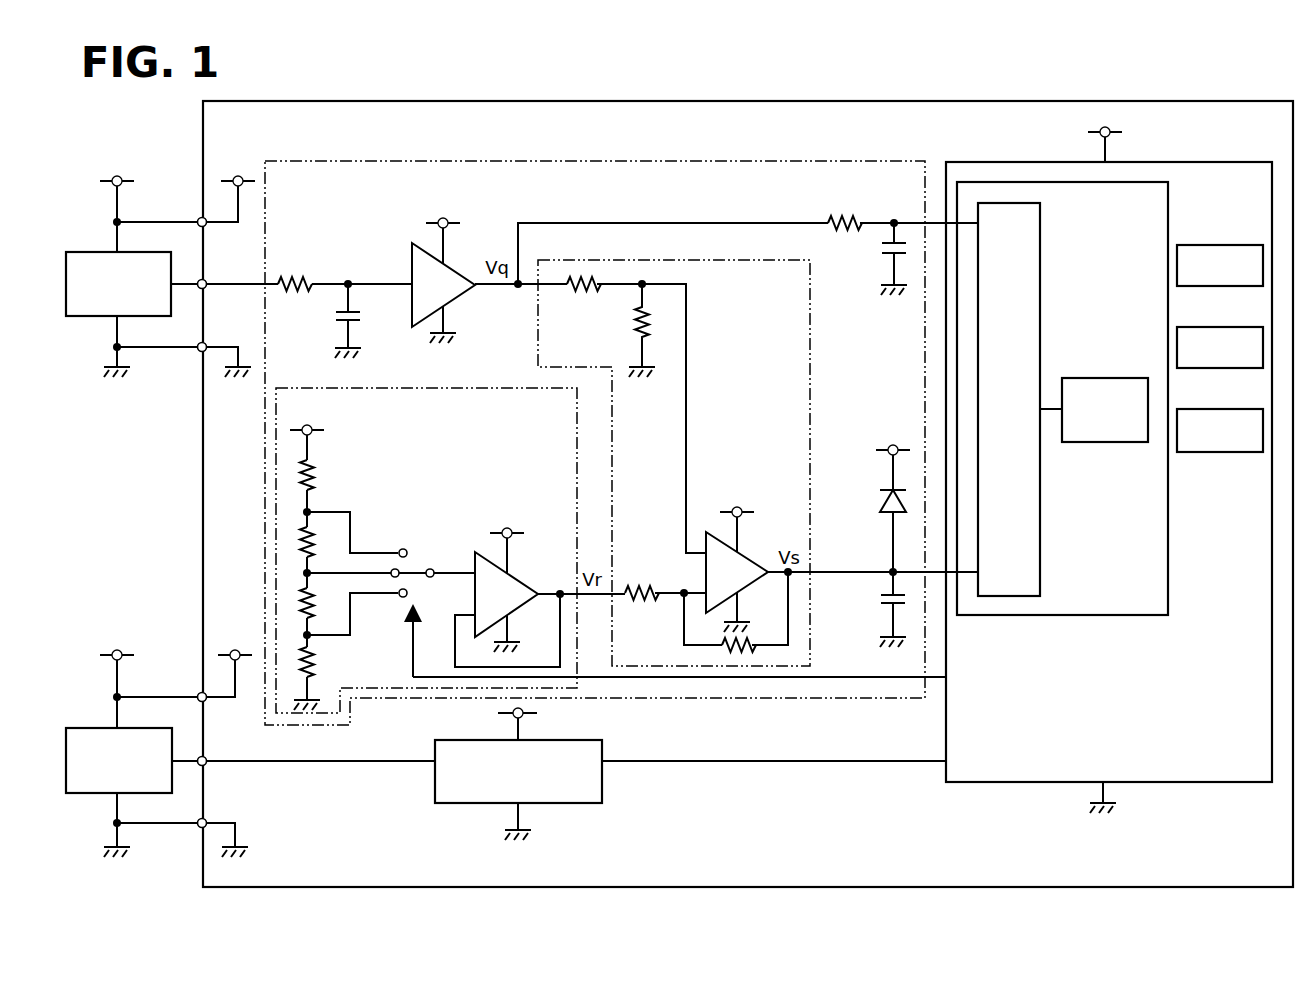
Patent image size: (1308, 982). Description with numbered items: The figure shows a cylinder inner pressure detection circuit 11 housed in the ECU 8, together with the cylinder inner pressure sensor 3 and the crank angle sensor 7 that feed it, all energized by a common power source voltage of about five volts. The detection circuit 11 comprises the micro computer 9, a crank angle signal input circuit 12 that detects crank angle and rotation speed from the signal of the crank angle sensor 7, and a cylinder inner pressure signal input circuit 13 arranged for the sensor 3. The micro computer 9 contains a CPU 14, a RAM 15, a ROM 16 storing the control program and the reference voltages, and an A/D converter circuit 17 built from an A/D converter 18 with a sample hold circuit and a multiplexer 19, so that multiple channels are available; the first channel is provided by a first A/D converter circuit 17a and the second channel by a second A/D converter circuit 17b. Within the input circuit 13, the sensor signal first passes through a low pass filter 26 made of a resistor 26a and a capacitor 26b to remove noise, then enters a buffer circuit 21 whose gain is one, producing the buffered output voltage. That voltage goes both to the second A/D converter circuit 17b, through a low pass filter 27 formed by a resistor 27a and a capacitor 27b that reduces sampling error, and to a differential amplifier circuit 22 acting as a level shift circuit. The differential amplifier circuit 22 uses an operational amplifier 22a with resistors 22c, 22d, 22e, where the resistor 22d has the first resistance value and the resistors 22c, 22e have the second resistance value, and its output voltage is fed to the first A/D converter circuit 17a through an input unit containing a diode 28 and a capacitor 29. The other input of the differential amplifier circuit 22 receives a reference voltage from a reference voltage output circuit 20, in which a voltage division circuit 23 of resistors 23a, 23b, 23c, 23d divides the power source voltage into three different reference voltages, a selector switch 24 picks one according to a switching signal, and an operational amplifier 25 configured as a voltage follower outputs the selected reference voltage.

The cylinder inner pressure sensor 3 is at (76, 254).
The crank angle sensor 7 is at (74, 724).
The ECU 8 is at (637, 101).
The micro computer 9 is at (1195, 162).
The cylinder inner pressure detection circuit 11 is at (843, 142).
The crank angle signal input circuit 12 is at (605, 744).
The cylinder inner pressure signal input circuit 13 is at (461, 162).
The CPU 14 is at (1222, 245).
The RAM 15 is at (1220, 327).
The ROM 16 is at (1220, 409).
The A/D converter circuit 17 is at (1168, 190).
The first A/D converter circuit 17a is at (1062, 535).
The second A/D converter circuit 17b is at (1073, 245).
The A/D converter 18 is at (1105, 378).
The multiplexer 19 is at (1042, 283).
The reference voltage output circuit 20 is at (496, 388).
The buffer circuit 21 is at (414, 248).
The differential amplifier circuit 22 is at (814, 382).
The operational amplifier 22a is at (580, 282).
The resistor 22c is at (634, 339).
The resistor 22d is at (644, 578).
The resistor 22e is at (718, 651).
The voltage division circuit 23 is at (343, 472).
The resistor 23a is at (300, 470).
The resistor 23b is at (300, 544).
The resistor 23c is at (300, 605).
The resistor 23d is at (320, 665).
The selector switch 24 is at (414, 564).
The operational amplifier 25 is at (522, 580).
The low pass filter 26 is at (348, 250).
The resistor 26a is at (298, 278).
The capacitor 26b is at (360, 322).
The low pass filter 27 is at (868, 218).
The resistor 27a is at (840, 216).
The capacitor 27b is at (884, 256).
The diode 28 is at (882, 502).
The capacitor 29 is at (880, 607).